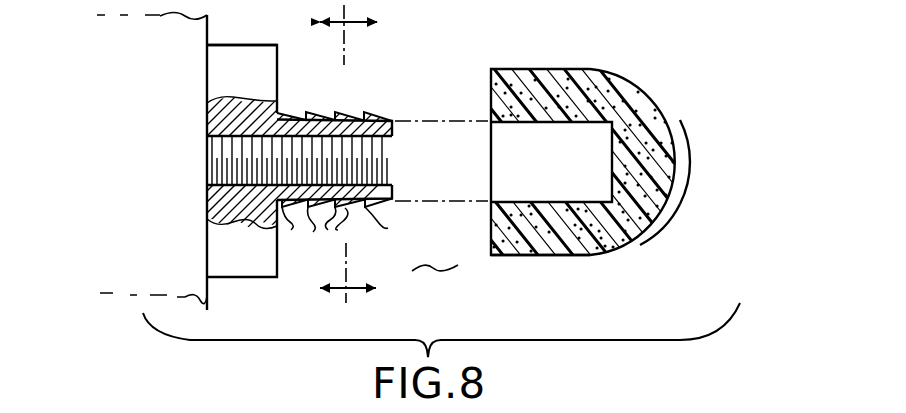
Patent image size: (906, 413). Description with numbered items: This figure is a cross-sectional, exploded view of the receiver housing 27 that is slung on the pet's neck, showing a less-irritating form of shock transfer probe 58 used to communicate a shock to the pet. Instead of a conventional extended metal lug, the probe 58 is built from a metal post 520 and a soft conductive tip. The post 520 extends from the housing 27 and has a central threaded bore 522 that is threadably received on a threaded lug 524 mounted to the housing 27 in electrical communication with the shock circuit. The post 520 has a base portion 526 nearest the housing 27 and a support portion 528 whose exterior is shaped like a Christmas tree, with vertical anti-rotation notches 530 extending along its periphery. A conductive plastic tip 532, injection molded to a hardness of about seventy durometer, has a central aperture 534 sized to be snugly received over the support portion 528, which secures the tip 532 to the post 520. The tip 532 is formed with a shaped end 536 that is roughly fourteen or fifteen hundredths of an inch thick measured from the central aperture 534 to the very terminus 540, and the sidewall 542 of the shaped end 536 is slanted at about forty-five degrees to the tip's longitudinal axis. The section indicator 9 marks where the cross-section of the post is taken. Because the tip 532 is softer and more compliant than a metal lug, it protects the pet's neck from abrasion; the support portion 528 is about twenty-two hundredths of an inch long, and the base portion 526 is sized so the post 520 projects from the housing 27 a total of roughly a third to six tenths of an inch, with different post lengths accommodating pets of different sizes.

The metal post 520 is at (373, 97).
The central threaded bore 522 is at (208, 208).
The threaded lug 524 is at (237, 158).
The base portion 526 is at (256, 60).
The support portion 528 is at (380, 204).
The anti-rotation notches 530 is at (335, 234).
The conductive plastic tip 532 is at (675, 90).
The central aperture 534 is at (516, 168).
The shaped end 536 is at (673, 201).
The terminus 540 is at (694, 163).
The sidewall 542 is at (599, 256).
The shock transfer probe 58 is at (433, 283).
The housing 27 is at (207, 292).
The section line 9 is at (359, 154).